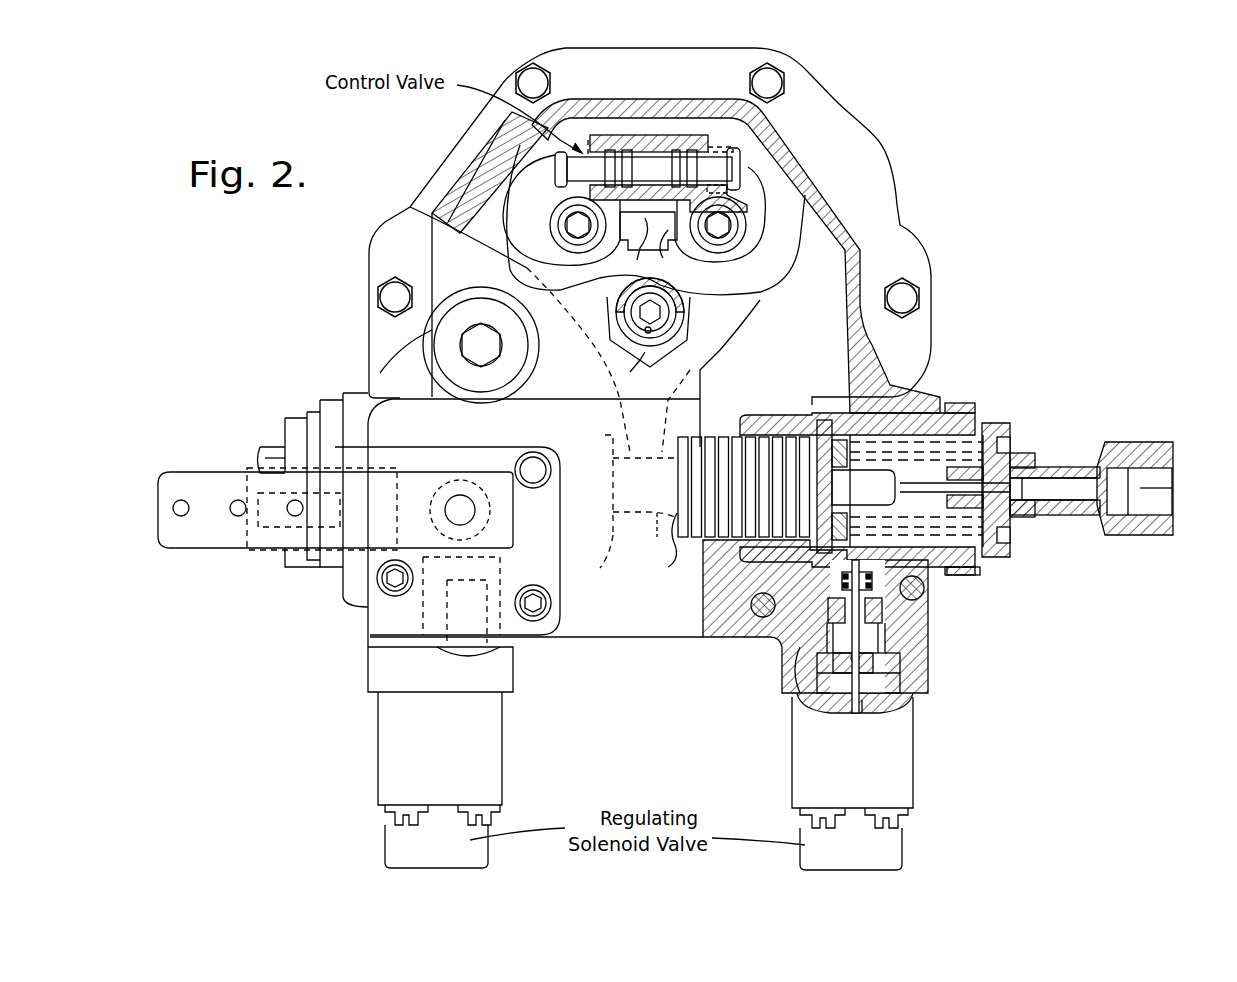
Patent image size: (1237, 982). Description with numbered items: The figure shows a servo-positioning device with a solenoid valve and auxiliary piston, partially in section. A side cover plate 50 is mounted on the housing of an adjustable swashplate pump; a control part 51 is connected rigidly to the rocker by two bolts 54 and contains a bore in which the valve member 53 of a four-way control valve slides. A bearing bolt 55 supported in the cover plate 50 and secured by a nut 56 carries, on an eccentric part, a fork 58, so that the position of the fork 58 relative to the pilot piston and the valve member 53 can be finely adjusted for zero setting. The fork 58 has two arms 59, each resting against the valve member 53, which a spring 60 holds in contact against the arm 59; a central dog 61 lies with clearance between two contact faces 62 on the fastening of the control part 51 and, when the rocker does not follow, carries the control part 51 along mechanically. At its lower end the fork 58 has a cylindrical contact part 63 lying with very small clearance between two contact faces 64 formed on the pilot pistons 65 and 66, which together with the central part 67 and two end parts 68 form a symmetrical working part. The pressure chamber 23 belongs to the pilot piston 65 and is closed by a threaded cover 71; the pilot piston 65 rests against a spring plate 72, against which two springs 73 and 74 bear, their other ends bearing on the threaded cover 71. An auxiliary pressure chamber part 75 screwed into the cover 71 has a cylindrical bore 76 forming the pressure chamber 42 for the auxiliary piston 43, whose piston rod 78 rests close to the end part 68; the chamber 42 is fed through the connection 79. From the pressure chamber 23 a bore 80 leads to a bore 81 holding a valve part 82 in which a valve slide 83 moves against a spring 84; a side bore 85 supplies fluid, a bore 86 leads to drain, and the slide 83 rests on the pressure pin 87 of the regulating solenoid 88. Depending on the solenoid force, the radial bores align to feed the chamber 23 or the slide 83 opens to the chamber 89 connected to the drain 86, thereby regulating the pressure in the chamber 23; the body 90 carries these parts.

The pressure chamber 23 is at (1000, 468).
The pressure chamber 42 is at (1080, 500).
The auxiliary piston 43 is at (1018, 490).
The side cover plate 50 is at (826, 186).
The control part 51 is at (688, 150).
The valve member 53 is at (650, 160).
The bolts 54 is at (570, 225).
The bearing bolt 55 is at (662, 300).
The nut 56 is at (643, 372).
The fork 58 is at (787, 218).
The arms 59 is at (555, 157).
The spring 60 is at (762, 118).
The central dog 61 is at (628, 247).
The contact faces 62 is at (674, 253).
The cylindrical contact part 63 is at (645, 532).
The contact faces 64 is at (657, 548).
The pilot piston 65 is at (740, 450).
The pilot piston 66 is at (591, 559).
The central part 67 is at (637, 480).
The end parts 68 is at (860, 405).
The threaded cover 71 is at (990, 565).
The spring plate 72 is at (820, 470).
The spring 73 is at (930, 435).
The spring 74 is at (970, 450).
The auxiliary pressure chamber part 75 is at (1100, 448).
The cylindrical bore 76 is at (1055, 478).
The piston rod 78 is at (935, 488).
The connection 79 is at (1155, 489).
The bore 80 is at (865, 563).
The bore 81 is at (876, 595).
The valve part 82 is at (812, 700).
The valve slide 83 is at (842, 705).
The spring 84 is at (843, 590).
The side bore 85 is at (890, 635).
The bore 86 is at (818, 656).
The pressure pin 87 is at (862, 705).
The regulating solenoid 88 is at (905, 770).
The chamber 89 is at (882, 684).
The body 90 is at (382, 610).